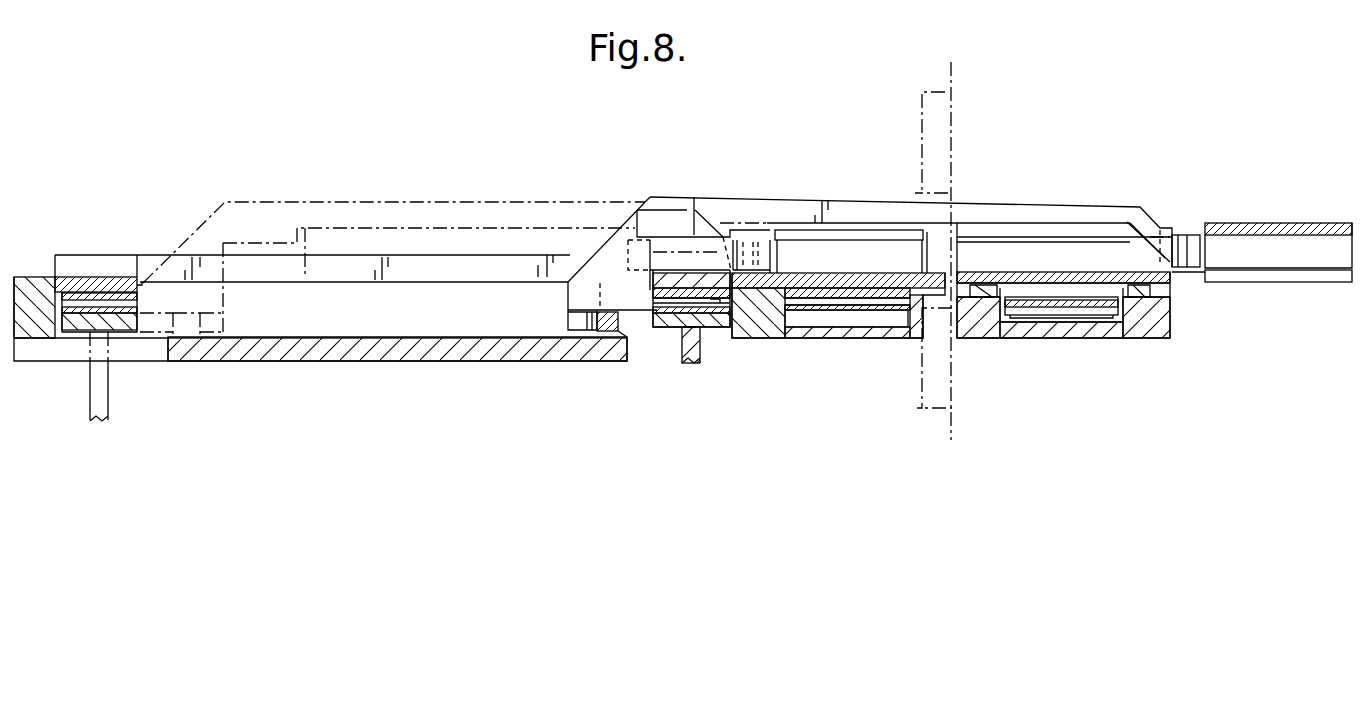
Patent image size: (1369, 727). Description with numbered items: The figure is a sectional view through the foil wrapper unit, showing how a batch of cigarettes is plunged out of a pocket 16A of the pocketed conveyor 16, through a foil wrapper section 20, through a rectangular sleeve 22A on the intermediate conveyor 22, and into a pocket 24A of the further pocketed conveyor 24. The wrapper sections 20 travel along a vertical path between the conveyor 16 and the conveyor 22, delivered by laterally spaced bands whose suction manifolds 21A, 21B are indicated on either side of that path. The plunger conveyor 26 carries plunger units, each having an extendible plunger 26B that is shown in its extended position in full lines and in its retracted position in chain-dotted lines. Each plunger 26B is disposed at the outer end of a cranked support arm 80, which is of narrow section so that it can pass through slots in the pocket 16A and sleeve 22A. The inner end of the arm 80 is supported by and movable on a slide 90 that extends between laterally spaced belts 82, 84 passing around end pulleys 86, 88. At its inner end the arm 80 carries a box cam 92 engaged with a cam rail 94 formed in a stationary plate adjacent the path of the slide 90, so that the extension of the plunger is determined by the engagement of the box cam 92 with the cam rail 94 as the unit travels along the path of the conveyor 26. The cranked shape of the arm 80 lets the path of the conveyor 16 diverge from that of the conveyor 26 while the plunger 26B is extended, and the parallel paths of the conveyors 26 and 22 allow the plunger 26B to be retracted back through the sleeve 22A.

The pocketed conveyor 16 is at (820, 300).
The pocket 16A is at (858, 238).
The foil wrapper section 20 is at (953, 157).
The suction manifold 21A is at (932, 148).
The suction manifold 21B is at (932, 363).
The intermediate conveyor 22 is at (1093, 300).
The sleeve 22A is at (1053, 233).
The pocketed conveyor 24 is at (1260, 223).
The pocket 24A is at (1272, 275).
The plunger conveyor 26 is at (100, 283).
The extendible plunger 26B is at (1200, 253).
The cranked support arm 80 is at (803, 215).
The belt 82 is at (87, 305).
The belt 84 is at (727, 300).
The end pulley 86 is at (104, 384).
The end pulley 88 is at (697, 343).
The slide 90 is at (417, 267).
The box cam 92 is at (582, 298).
The cam rail 94 is at (610, 322).